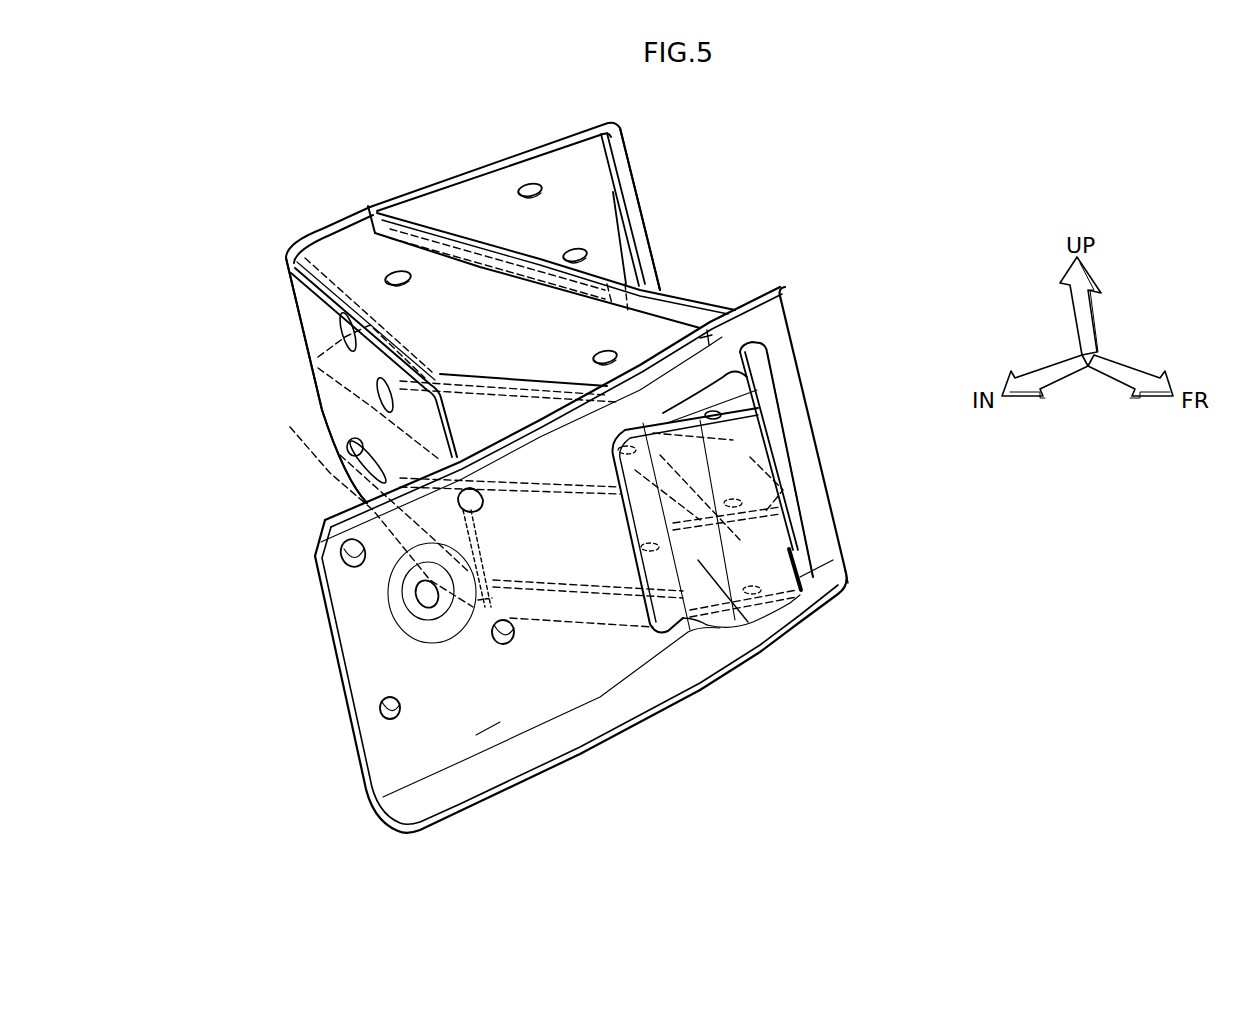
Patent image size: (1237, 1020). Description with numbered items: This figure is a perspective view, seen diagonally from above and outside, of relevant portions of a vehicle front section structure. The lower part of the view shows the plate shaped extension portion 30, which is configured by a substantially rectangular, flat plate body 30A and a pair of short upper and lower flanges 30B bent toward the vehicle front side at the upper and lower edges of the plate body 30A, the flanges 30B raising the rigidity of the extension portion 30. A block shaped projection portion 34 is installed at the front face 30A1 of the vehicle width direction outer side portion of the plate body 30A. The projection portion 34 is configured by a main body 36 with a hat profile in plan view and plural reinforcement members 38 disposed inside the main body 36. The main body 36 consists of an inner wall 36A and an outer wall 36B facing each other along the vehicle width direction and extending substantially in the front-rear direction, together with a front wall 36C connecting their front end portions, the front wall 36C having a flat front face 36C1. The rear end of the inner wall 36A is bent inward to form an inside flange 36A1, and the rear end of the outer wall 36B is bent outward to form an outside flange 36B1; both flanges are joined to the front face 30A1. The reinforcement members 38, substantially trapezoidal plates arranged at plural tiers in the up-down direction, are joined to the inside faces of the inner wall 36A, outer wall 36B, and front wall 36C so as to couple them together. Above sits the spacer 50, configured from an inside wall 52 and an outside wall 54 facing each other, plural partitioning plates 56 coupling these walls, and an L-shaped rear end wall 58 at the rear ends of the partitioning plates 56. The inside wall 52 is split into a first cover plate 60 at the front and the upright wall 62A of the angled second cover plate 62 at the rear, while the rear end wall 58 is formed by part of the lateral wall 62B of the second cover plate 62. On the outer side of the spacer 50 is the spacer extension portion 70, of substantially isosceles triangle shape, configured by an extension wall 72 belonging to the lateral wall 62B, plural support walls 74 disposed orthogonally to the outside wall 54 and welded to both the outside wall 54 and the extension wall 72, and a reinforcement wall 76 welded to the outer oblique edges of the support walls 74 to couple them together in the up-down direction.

The extension portion 30 is at (336, 727).
The plate body 30A is at (482, 730).
The front face 30A1 is at (527, 712).
The flanges 30B is at (325, 520).
The projection portion 34 is at (745, 632).
The main body 36 is at (806, 553).
The inner wall 36A is at (757, 640).
The inside flange 36A1 is at (687, 622).
The outer wall 36B is at (762, 373).
The outside flange 36B1 is at (774, 404).
The front wall 36C is at (712, 406).
The front face 36C1 is at (778, 525).
The reinforcement members 38 is at (728, 395).
The spacer 50 is at (300, 386).
The inside wall 52 is at (374, 359).
The outside wall 54 is at (680, 294).
The partitioning plates 56 is at (365, 250).
The rear end wall 58 is at (323, 228).
The first cover plate 60 is at (455, 425).
The second cover plate 62 is at (302, 341).
The upright wall 62A is at (305, 312).
The lateral wall 62B is at (462, 170).
The spacer extension portion 70 is at (660, 205).
The extension wall 72 is at (507, 154).
The support walls 74 is at (560, 167).
The reinforcement wall 76 is at (622, 171).